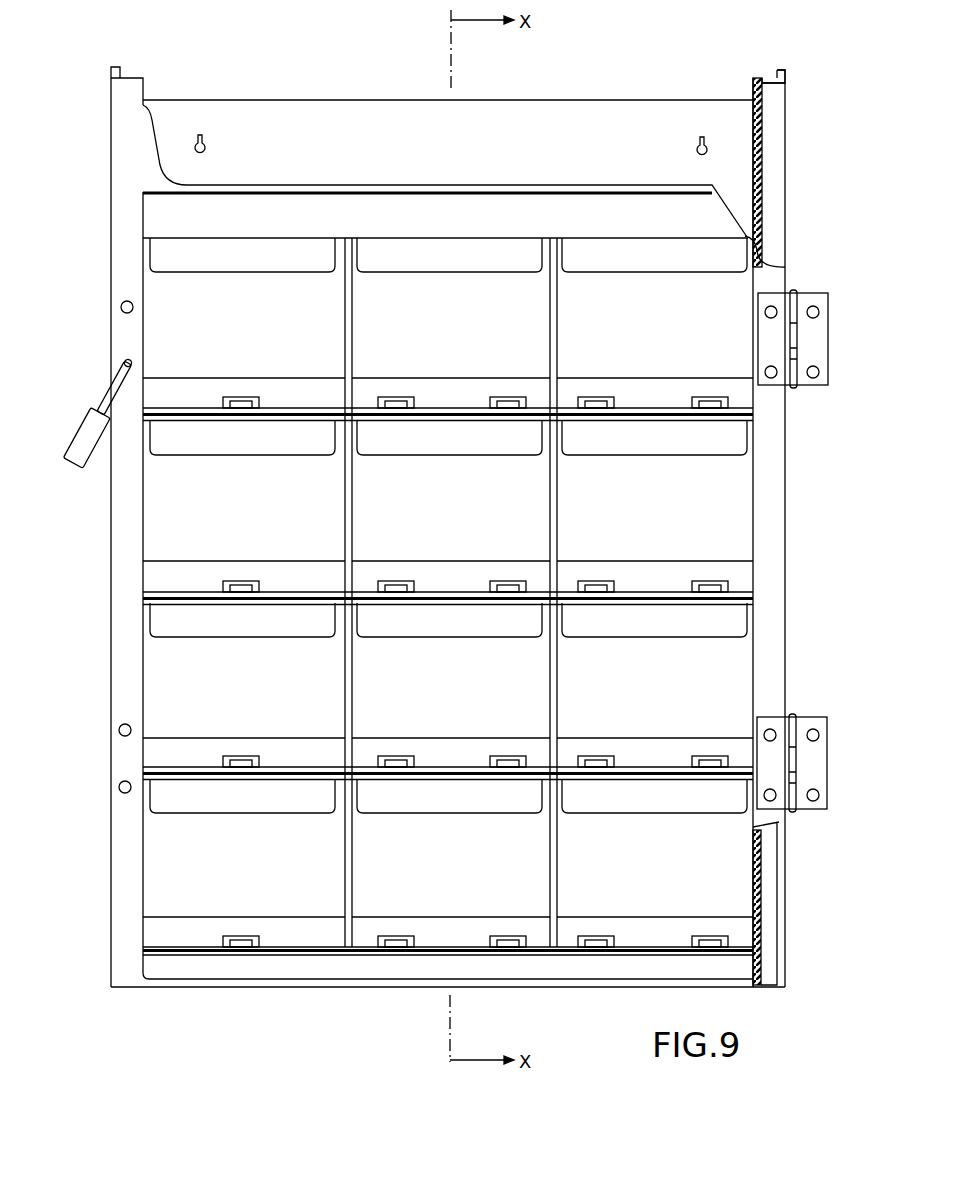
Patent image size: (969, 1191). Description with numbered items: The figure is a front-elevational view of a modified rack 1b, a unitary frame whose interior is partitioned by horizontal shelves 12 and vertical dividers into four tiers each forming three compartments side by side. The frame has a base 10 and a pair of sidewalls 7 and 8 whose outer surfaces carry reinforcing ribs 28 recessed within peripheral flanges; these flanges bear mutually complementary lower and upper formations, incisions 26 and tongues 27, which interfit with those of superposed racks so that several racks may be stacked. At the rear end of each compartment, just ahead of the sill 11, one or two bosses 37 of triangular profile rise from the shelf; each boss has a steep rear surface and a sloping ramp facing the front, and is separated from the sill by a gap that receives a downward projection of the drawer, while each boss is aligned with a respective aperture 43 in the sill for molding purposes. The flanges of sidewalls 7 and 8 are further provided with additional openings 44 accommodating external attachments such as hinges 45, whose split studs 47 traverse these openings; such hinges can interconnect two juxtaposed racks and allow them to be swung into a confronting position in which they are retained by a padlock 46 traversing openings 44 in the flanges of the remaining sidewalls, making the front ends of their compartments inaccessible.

The modified rack 1b is at (686, 90).
The sidewall 7 is at (110, 603).
The sidewall 8 is at (775, 548).
The base 10 is at (291, 945).
The sill 11 is at (420, 396).
The horizontal shelf 12 is at (296, 765).
The incision 26 is at (778, 989).
The tongue 27 is at (783, 75).
The reinforcing rib 28 is at (767, 187).
The boss 37 is at (247, 397).
The aperture 43 is at (230, 396).
The opening 44 is at (124, 360).
The hinge 45 is at (793, 292).
The padlock 46 is at (95, 445).
The split stud 47 is at (816, 306).